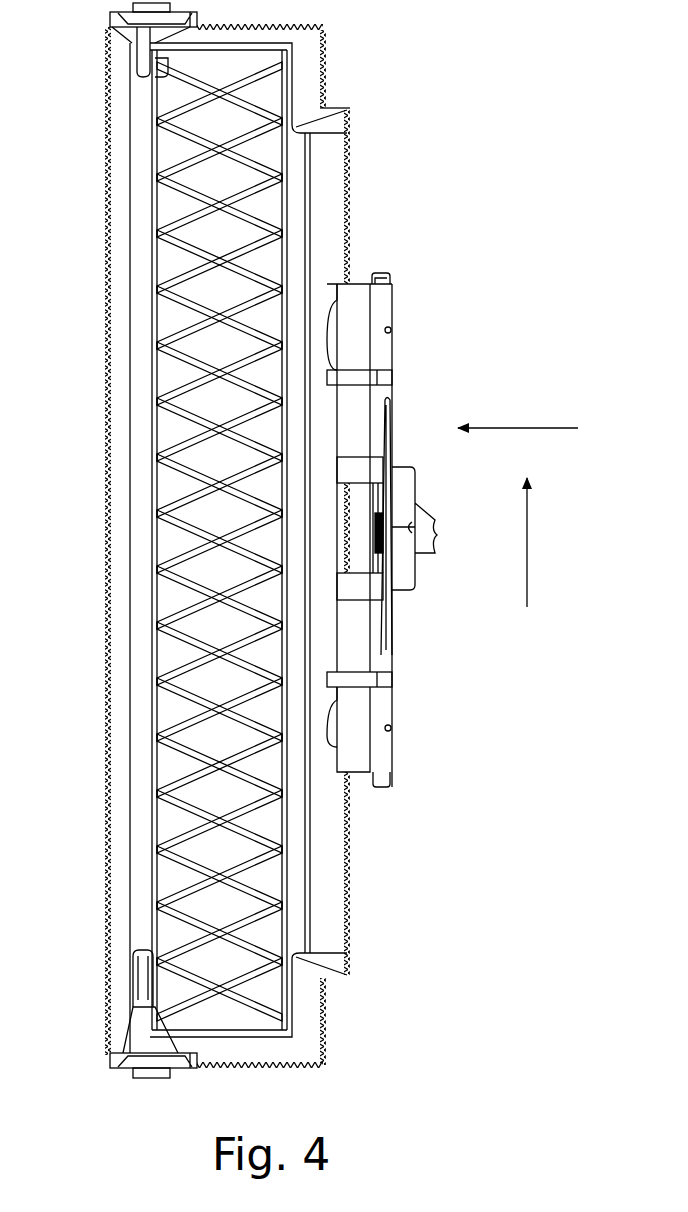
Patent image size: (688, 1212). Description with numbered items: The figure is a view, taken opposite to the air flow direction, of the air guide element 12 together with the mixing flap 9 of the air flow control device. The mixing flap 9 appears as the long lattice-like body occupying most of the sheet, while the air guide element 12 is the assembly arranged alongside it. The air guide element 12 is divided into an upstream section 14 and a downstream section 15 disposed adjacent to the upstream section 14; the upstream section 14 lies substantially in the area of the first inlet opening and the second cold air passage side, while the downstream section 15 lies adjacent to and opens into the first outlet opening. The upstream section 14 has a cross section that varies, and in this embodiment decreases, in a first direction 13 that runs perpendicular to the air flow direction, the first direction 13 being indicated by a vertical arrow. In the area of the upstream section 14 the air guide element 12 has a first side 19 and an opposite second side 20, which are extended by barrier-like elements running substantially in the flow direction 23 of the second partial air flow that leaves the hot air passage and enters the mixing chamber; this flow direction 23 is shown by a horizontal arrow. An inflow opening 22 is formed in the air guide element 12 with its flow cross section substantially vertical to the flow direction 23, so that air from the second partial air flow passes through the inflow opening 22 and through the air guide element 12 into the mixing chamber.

The mixing flap 9 is at (105, 500).
The air guide element 12 is at (389, 264).
The first direction 13 is at (527, 535).
The upstream section 14 is at (354, 657).
The downstream section 15 is at (396, 419).
The first side 19 is at (357, 288).
The second side 20 is at (358, 770).
The inflow opening 22 is at (437, 539).
The flow direction of the second partial air flow 23 is at (522, 428).